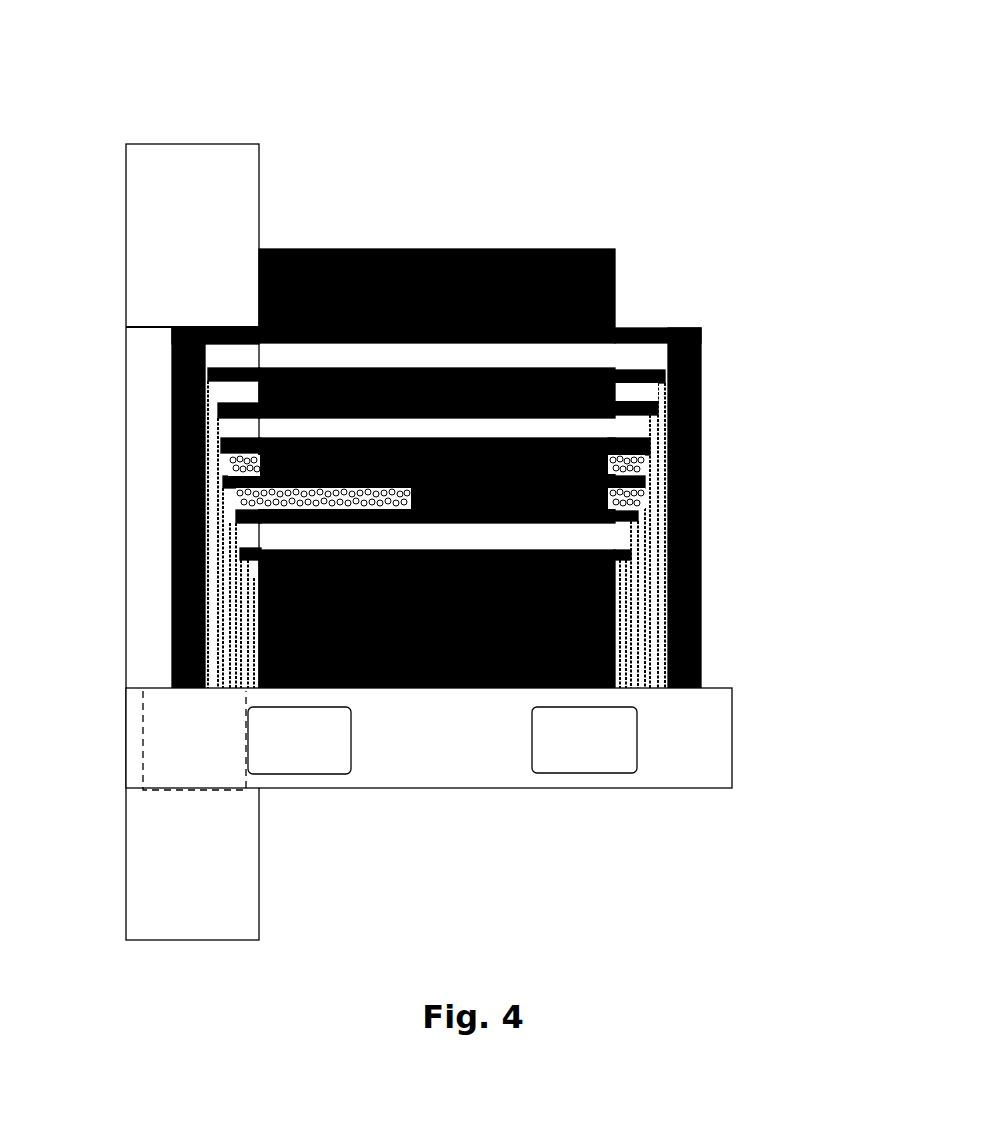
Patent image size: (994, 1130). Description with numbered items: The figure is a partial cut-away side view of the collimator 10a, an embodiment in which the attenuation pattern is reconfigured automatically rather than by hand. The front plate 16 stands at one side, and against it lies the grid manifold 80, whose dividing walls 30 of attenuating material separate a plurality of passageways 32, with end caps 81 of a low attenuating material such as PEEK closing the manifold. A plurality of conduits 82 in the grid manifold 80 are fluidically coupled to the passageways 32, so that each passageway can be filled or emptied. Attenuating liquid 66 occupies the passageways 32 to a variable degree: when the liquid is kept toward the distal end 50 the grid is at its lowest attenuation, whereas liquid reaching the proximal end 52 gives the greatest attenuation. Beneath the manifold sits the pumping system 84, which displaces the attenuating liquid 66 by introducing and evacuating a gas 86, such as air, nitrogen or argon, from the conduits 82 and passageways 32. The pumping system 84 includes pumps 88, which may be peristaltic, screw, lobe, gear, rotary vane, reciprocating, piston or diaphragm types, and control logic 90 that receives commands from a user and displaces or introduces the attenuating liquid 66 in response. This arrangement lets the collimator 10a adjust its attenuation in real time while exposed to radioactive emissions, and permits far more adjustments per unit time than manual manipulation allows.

The collimator 10a is at (291, 88).
The front plate 16 is at (126, 131).
The dividing walls 30 is at (643, 363).
The passageways 32 is at (617, 380).
The distal end 50 is at (705, 313).
The proximal end 52 is at (166, 317).
The attenuating liquid 66 is at (572, 483).
The grid manifold 80 is at (552, 237).
The end caps 81 is at (200, 325).
The conduits 82 is at (205, 458).
The pumping system 84 is at (690, 738).
The gas 86 is at (637, 460).
The pumps 88 is at (272, 745).
The control logic 90 is at (583, 745).